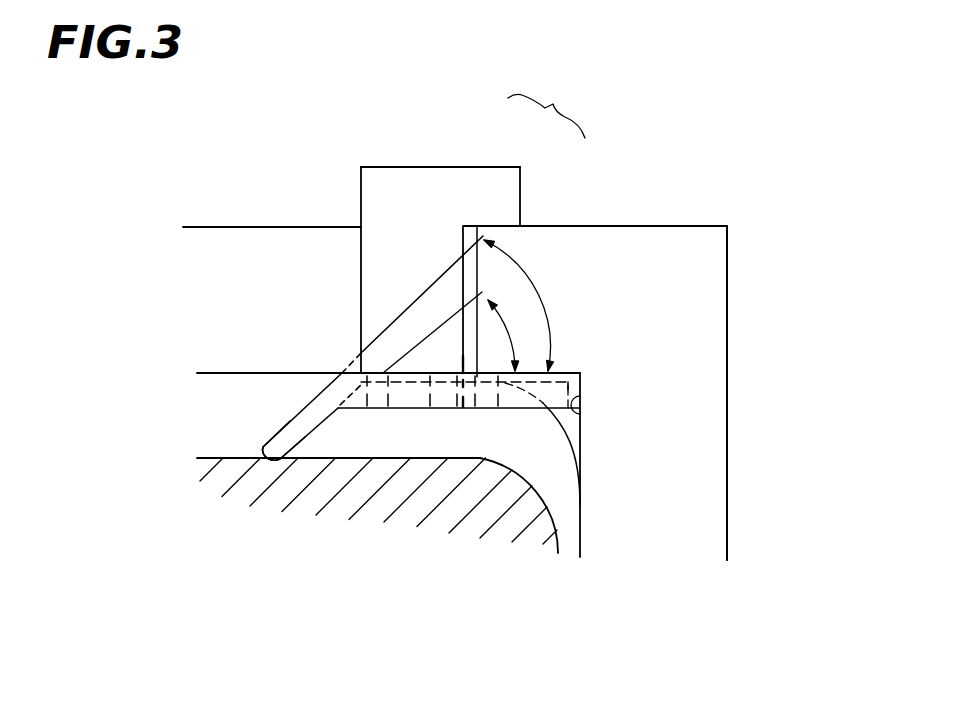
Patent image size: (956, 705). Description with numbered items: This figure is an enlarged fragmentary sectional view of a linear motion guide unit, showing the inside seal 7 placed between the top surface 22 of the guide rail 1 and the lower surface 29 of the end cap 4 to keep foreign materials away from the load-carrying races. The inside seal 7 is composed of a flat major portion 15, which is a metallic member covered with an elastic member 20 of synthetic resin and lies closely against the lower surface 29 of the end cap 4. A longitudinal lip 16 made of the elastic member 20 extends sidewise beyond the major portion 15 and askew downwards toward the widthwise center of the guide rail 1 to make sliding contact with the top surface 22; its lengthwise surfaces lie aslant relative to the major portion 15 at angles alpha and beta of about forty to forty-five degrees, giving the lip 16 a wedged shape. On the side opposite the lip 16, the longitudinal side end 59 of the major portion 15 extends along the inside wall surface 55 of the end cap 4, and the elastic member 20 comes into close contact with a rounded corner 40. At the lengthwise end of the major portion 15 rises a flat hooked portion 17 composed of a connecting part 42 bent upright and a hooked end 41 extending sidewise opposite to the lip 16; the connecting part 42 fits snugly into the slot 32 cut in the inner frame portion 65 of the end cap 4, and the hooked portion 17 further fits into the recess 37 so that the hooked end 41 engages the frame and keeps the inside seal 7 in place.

The guide rail 1 is at (467, 510).
The end cap 4 is at (258, 262).
The inside seal 7 is at (405, 183).
The flat major portion 15 is at (410, 400).
The longitudinal lip 16 is at (295, 433).
The hooked portion 17 is at (549, 109).
The elastic member 20 is at (582, 372).
The top surface of the guide rail 22 is at (240, 458).
The lower surface of the end cap 29 is at (256, 374).
The slot 32 is at (477, 323).
The recess 37 is at (592, 219).
The rounded corner 40 is at (568, 432).
The hooked end 41 is at (485, 178).
The connecting part 42 is at (430, 280).
The inside wall surface of the end cap 55 is at (581, 418).
The longitudinal side end of the major portion 59 is at (577, 388).
The inner frame portion 65 is at (676, 280).